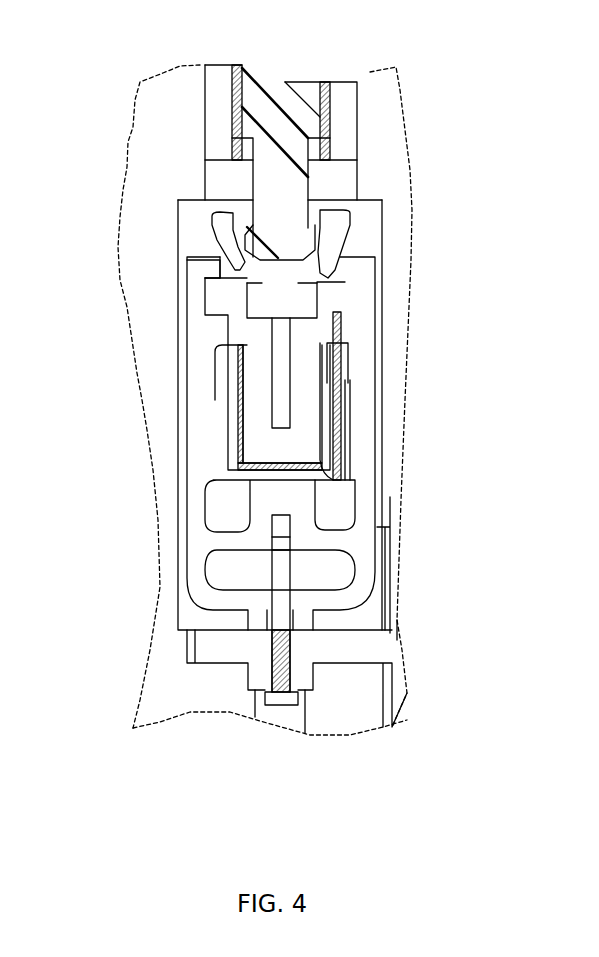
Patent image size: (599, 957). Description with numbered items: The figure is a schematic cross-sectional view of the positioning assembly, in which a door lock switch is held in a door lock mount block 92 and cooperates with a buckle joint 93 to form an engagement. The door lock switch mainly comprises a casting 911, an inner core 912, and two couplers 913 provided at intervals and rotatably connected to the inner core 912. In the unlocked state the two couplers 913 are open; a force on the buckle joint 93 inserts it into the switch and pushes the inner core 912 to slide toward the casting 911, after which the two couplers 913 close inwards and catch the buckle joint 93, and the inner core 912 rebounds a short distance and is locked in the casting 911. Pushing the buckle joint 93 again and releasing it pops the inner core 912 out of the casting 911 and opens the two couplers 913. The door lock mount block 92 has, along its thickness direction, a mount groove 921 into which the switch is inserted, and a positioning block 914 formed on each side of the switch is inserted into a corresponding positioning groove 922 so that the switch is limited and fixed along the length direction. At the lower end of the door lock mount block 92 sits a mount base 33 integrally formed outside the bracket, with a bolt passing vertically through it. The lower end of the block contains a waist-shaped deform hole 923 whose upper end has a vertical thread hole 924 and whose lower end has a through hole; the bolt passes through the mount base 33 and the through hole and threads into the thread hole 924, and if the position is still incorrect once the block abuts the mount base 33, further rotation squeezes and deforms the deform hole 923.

The buckle joint 93 is at (290, 185).
The couplers 913 is at (320, 228).
The inner core 912 is at (333, 318).
The casting 911 is at (327, 410).
The positioning block 914 is at (222, 300).
The positioning groove 922 is at (205, 302).
The mount groove 921 is at (230, 388).
The door lock mount block 92 is at (207, 428).
The thread hole 924 is at (375, 523).
The deform hole 923 is at (330, 573).
The mount base 33 is at (333, 650).